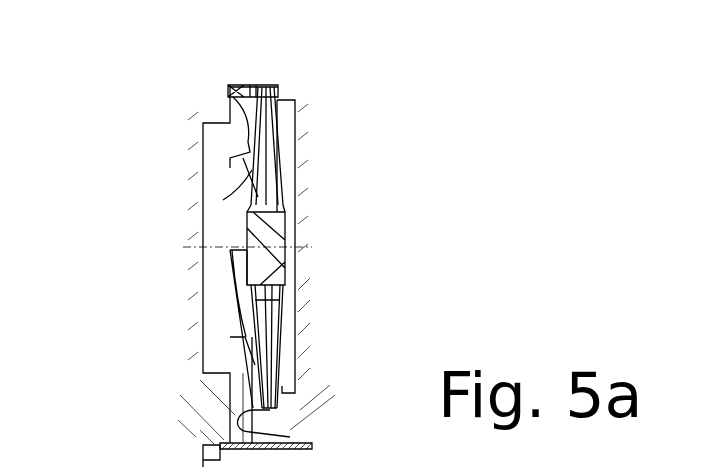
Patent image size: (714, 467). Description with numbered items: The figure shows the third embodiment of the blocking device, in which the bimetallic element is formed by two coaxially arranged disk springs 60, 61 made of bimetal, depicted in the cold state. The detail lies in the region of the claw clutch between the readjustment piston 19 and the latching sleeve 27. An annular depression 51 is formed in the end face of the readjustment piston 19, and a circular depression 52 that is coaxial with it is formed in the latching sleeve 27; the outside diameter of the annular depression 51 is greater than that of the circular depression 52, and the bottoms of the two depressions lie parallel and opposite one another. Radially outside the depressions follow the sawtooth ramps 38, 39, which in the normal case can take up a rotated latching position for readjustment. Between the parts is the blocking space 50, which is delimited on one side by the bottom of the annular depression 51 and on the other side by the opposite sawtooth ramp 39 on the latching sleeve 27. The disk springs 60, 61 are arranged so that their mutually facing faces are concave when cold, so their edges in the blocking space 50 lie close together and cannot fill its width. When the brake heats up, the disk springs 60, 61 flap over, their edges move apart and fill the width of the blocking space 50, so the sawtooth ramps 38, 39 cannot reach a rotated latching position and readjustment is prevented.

The readjustment piston 19 is at (307, 122).
The latching sleeve 27 is at (196, 173).
The sawtooth ramp 38 is at (300, 438).
The sawtooth ramp 39 is at (245, 142).
The blocking space 50 is at (250, 92).
The annular depression 51 is at (297, 345).
The circular depression 52 is at (216, 294).
The disk spring 60 is at (283, 176).
The disk spring 61 is at (223, 200).